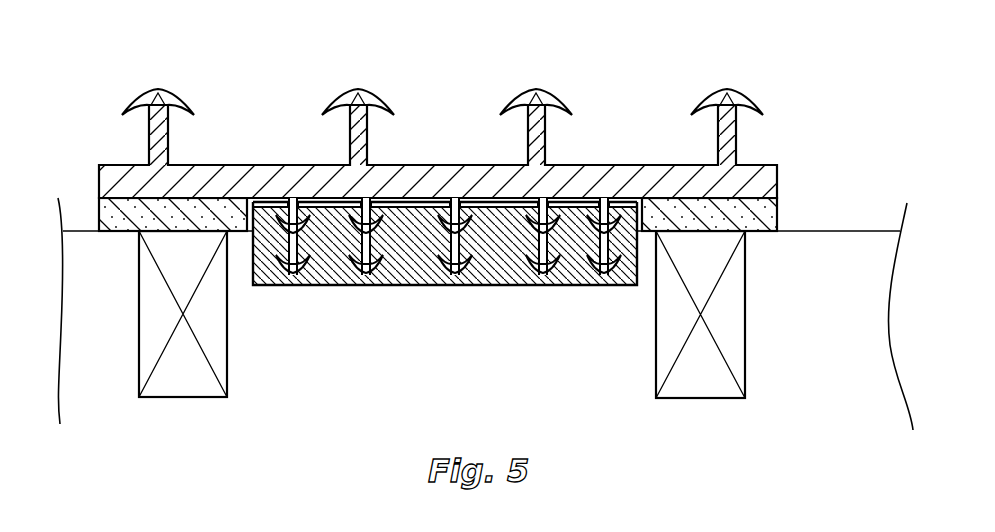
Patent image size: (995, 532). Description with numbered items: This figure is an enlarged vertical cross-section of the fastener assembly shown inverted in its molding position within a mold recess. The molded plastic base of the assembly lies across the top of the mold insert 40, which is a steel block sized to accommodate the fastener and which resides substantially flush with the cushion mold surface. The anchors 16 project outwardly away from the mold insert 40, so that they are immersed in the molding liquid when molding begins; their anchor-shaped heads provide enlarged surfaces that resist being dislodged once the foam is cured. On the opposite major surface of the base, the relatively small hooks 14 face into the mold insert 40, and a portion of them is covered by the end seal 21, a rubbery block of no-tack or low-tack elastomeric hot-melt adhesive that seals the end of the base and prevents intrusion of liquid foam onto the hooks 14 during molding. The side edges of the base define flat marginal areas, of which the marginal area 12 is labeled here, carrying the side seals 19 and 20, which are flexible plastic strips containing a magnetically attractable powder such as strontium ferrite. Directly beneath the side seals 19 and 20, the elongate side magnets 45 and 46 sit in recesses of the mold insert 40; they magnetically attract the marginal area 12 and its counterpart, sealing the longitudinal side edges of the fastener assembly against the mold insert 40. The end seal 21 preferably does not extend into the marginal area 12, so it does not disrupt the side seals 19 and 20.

The marginal area 12 is at (763, 183).
The hooks 14 is at (445, 291).
The anchors 16 is at (717, 90).
The side seal 19 is at (770, 213).
The side seal 20 is at (102, 210).
The end seal 21 is at (420, 272).
The mold insert 40 is at (845, 274).
The side magnet 45 is at (722, 312).
The side magnet 46 is at (163, 324).